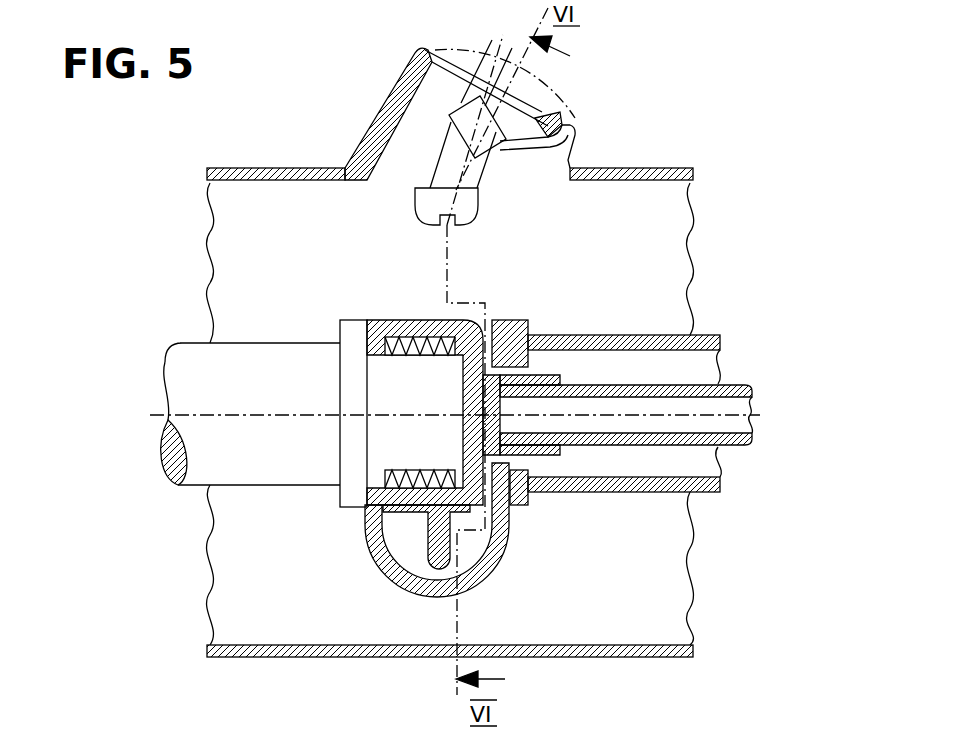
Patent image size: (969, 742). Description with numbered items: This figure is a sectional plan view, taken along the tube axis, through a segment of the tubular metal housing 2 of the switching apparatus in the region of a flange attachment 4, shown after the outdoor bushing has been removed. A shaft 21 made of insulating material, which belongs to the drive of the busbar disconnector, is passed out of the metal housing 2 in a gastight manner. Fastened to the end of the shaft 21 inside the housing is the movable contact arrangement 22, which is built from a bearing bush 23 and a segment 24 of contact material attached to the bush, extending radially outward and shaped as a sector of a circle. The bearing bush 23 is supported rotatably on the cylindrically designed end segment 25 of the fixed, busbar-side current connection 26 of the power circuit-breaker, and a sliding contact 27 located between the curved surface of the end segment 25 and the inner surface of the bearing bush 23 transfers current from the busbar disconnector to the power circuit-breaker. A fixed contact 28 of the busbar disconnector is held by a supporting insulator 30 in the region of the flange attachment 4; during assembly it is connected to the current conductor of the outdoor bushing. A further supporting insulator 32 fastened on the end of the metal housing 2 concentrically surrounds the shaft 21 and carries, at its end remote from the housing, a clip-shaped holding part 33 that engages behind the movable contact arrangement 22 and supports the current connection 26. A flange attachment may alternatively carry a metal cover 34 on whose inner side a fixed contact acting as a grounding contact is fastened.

The metal housing 2 is at (650, 224).
The flange attachment 4 is at (377, 135).
The shaft 21 is at (727, 408).
The movable contact arrangement 22 is at (463, 431).
The bearing bush 23 is at (418, 325).
The segment of contact material 24 is at (445, 547).
The end segment 25 is at (405, 390).
The fixed current connection 26 is at (232, 378).
The sliding contact 27 is at (365, 538).
The fixed contact 28 is at (470, 207).
The supporting insulator 30 is at (540, 117).
The supporting insulator 32 is at (673, 462).
The holding part 33 is at (500, 538).
The metal cover 34 is at (473, 67).